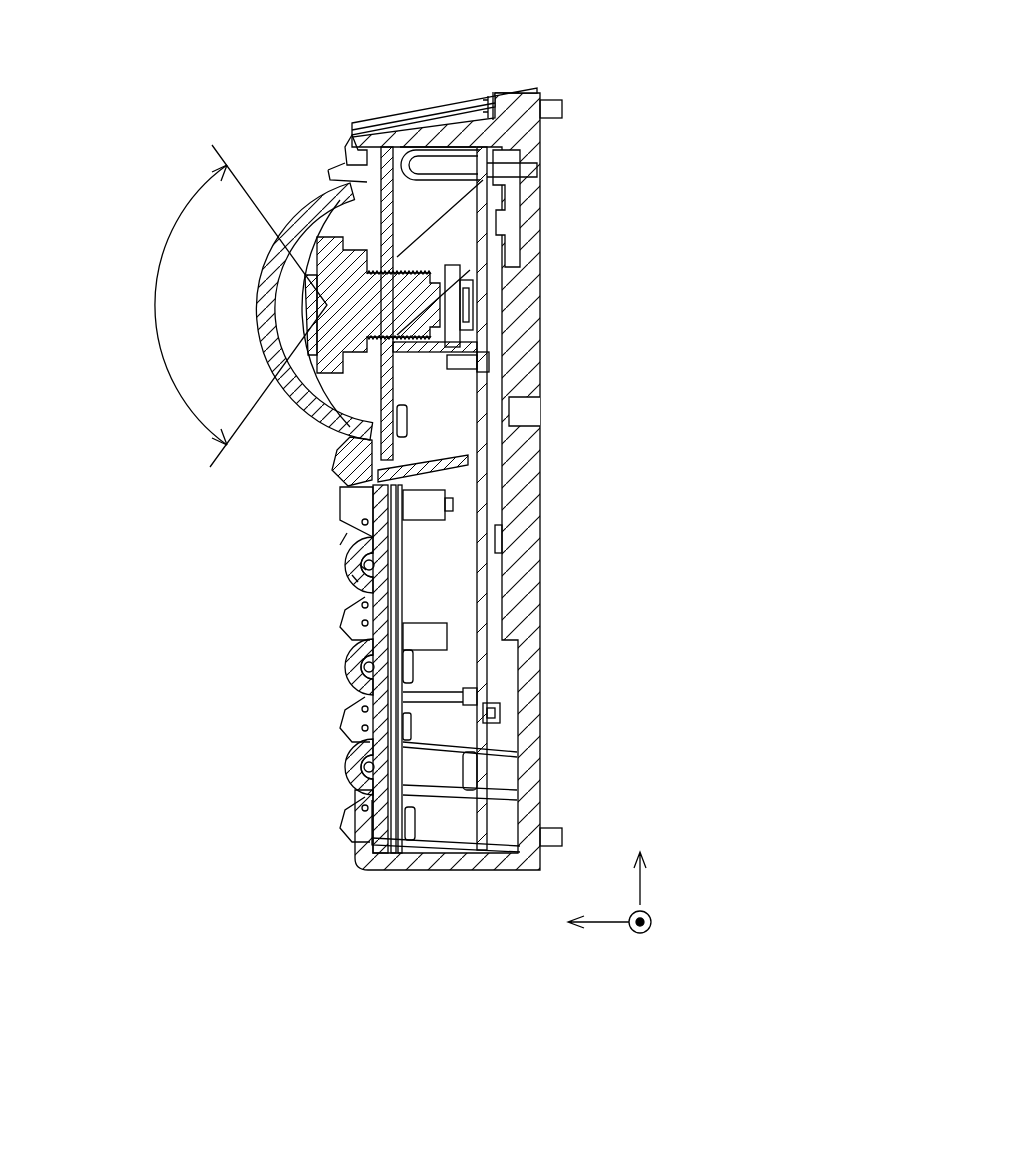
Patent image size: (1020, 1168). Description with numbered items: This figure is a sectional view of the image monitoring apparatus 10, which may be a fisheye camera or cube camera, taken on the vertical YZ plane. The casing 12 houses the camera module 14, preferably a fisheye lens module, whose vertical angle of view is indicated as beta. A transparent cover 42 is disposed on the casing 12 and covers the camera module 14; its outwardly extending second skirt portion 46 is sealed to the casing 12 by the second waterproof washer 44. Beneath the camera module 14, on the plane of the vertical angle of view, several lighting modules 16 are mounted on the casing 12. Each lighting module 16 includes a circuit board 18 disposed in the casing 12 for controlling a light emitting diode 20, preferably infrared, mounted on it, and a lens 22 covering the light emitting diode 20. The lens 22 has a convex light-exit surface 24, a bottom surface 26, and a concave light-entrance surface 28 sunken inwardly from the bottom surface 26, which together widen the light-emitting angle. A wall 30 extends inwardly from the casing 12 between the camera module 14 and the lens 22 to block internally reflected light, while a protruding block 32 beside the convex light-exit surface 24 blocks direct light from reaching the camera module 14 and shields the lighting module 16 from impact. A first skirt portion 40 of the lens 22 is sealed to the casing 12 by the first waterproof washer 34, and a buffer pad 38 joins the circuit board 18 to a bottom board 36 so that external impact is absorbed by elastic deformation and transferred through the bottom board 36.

The image monitoring apparatus 10 is at (607, 75).
The casing 12 is at (527, 732).
The camera module 14 is at (310, 248).
The lighting module 16 is at (333, 667).
The circuit board 18 is at (373, 520).
The light emitting diode 20 is at (368, 558).
The lens 22 is at (397, 590).
The convex light-exit surface 24 is at (340, 560).
The bottom surface 26 is at (347, 543).
The concave light-entrance surface 28 is at (353, 577).
The wall 30 is at (430, 468).
The protruding block 32 is at (343, 522).
The first waterproof washer 34 is at (400, 607).
The bottom board 36 is at (372, 612).
The buffer pad 38 is at (366, 603).
The first skirt portion 40 is at (347, 628).
The transparent cover 42 is at (335, 303).
The second waterproof washer 44 is at (352, 150).
The second skirt portion 46 is at (373, 157).